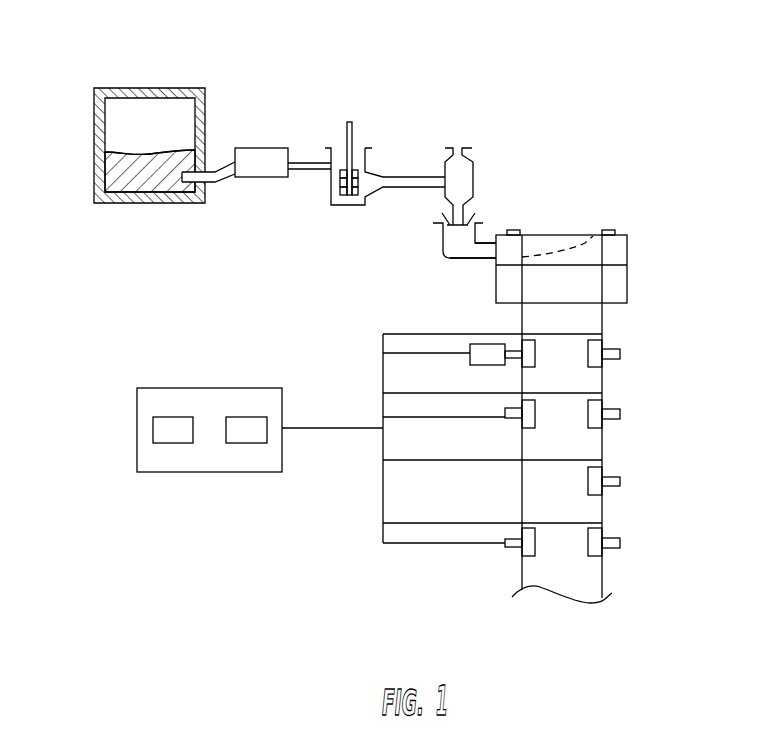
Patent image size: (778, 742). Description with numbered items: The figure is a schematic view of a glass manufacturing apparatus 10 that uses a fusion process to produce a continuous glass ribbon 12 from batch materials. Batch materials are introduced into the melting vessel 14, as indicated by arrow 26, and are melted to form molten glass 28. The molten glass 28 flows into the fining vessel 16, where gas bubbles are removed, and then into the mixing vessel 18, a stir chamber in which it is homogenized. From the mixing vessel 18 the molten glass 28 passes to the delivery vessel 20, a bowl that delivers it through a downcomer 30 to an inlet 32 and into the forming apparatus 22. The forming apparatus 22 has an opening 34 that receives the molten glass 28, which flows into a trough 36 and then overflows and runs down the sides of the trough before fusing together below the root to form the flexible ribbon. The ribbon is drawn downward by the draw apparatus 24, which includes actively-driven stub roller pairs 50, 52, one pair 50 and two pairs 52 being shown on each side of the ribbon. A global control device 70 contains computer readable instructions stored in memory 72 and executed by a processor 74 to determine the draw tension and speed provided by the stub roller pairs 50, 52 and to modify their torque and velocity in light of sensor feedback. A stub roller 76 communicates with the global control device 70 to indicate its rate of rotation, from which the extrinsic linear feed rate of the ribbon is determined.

The glass manufacturing apparatus 10 is at (546, 89).
The glass ribbon 12 is at (580, 573).
The melting vessel 14 is at (152, 88).
The fining vessel 16 is at (262, 148).
The mixing vessel 18 is at (365, 162).
The delivery vessel 20 is at (474, 165).
The forming apparatus 22 is at (633, 253).
The draw apparatus 24 is at (686, 318).
The arrow 26 is at (123, 148).
The molten glass 28 is at (147, 157).
The downcomer 30 is at (466, 214).
The inlet 32 is at (446, 255).
The opening 34 is at (492, 266).
The trough 36 is at (568, 247).
The stub roller pair 50 is at (470, 357).
The stub roller pair 52 is at (505, 413).
The global control device 70 is at (177, 455).
The memory 72 is at (173, 417).
The processor 74 is at (242, 417).
The stub roller 76 is at (620, 481).